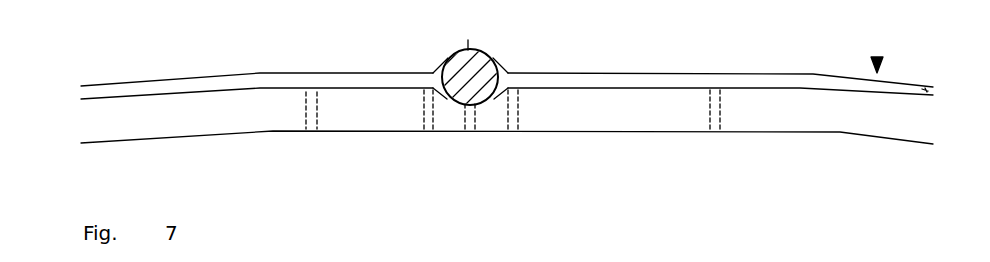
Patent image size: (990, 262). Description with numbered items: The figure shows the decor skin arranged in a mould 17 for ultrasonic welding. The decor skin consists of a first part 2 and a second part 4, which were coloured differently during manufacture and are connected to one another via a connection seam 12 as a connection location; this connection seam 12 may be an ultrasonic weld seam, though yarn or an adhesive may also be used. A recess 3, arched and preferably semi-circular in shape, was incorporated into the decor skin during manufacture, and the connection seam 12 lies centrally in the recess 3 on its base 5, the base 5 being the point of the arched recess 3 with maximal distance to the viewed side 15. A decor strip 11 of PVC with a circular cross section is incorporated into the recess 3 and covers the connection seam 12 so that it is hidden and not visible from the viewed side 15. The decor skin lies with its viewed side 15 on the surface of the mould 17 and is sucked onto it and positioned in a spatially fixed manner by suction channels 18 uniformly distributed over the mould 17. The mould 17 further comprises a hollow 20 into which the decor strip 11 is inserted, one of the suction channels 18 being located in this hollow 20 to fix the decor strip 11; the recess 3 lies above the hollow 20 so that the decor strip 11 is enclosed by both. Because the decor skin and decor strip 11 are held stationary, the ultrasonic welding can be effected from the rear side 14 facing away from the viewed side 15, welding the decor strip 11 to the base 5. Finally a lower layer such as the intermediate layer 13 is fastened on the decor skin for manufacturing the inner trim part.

The first part 2 is at (686, 73).
The recess 3 is at (452, 56).
The second part 4 is at (258, 73).
The base 5 is at (482, 47).
The decor strip 11 is at (490, 60).
The connection seam 12 is at (467, 48).
The intermediate layer 13 is at (752, 89).
The rear side 14 is at (883, 58).
The viewed side 15 is at (938, 92).
The mould 17 is at (897, 126).
The suction channels 18 is at (310, 130).
The hollow 20 is at (440, 99).